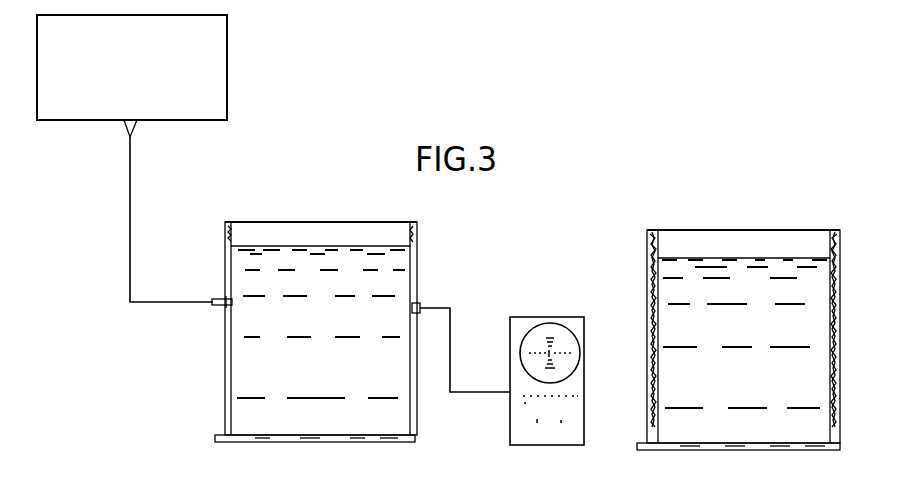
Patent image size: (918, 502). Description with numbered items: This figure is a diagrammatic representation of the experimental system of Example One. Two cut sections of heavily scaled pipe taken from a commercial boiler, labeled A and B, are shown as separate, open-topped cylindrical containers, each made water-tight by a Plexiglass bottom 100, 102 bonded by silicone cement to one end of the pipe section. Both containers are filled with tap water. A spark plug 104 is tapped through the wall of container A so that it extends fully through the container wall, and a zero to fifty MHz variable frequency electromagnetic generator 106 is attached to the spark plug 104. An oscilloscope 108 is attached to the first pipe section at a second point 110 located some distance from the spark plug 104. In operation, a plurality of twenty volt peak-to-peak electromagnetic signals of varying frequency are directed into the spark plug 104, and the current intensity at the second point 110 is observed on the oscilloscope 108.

The Plexiglass bottom 100 is at (375, 442).
The Plexiglass bottom 102 is at (775, 450).
The spark plug 104 is at (216, 296).
The variable frequency electromagnetic generator 106 is at (227, 36).
The oscilloscope 108 is at (562, 317).
The second point 110 is at (418, 305).